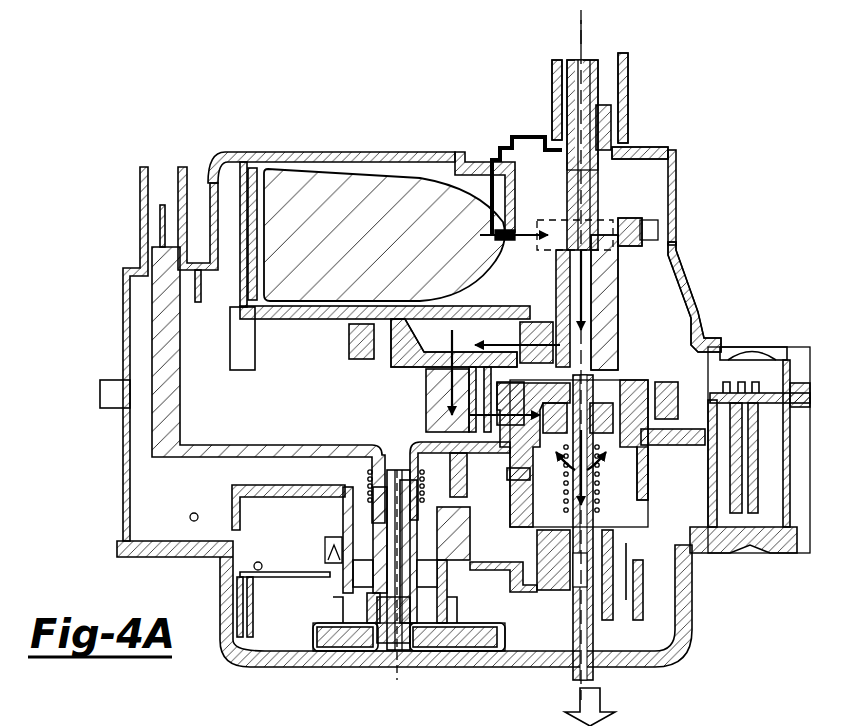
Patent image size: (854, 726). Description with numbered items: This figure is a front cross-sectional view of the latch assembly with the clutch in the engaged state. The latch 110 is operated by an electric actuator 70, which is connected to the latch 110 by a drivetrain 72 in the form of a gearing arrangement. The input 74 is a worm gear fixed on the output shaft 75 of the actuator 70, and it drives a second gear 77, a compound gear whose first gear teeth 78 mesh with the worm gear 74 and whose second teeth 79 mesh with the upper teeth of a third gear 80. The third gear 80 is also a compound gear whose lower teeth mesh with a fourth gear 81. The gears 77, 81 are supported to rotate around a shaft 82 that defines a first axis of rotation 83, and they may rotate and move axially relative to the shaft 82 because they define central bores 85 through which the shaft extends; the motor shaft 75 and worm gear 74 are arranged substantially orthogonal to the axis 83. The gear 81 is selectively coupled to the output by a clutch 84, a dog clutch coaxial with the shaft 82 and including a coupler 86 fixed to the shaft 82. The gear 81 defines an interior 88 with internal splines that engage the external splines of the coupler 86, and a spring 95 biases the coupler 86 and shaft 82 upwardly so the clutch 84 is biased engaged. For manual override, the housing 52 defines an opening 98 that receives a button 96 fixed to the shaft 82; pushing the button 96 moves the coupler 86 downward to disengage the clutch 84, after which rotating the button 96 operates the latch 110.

The housing 52 is at (656, 143).
The electric actuator 70 is at (307, 197).
The drivetrain 72 is at (645, 318).
The input 74 is at (650, 217).
The output shaft 75 is at (504, 230).
The second gear 77 is at (628, 233).
The first gear teeth 78 is at (650, 238).
The second teeth 79 is at (618, 349).
The third gear 80 is at (431, 415).
The fourth gear 81 is at (675, 395).
The shaft 82 is at (586, 165).
The first axis of rotation 83 is at (585, 42).
The clutch 84 is at (657, 493).
The central bores 85 is at (567, 349).
The coupler 86 is at (621, 429).
The interior 88 is at (633, 405).
The spring 95 is at (597, 488).
The button 96 is at (567, 77).
The opening 98 is at (606, 60).
The latch 110 is at (477, 672).